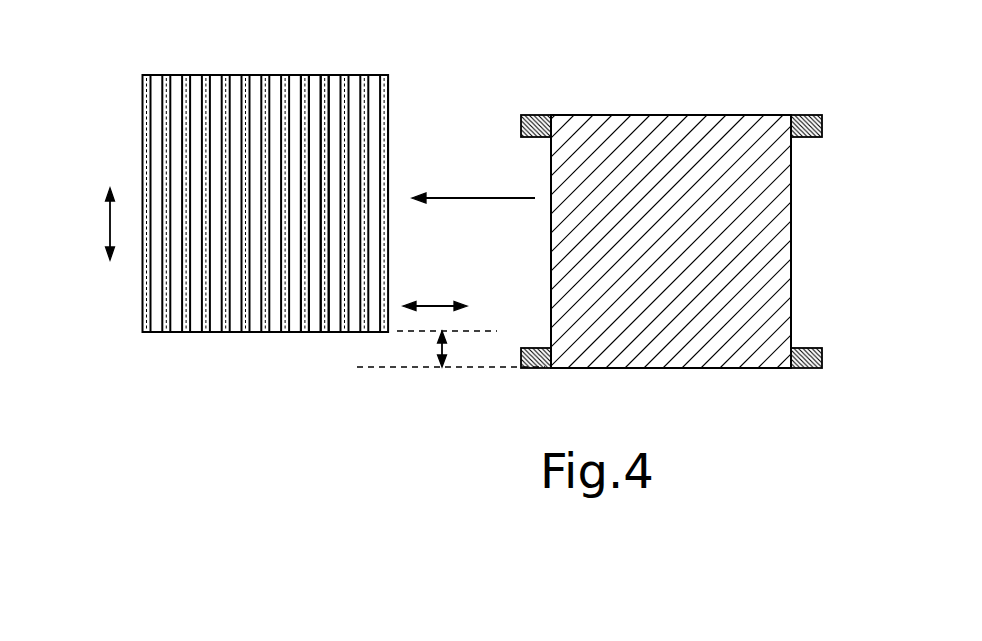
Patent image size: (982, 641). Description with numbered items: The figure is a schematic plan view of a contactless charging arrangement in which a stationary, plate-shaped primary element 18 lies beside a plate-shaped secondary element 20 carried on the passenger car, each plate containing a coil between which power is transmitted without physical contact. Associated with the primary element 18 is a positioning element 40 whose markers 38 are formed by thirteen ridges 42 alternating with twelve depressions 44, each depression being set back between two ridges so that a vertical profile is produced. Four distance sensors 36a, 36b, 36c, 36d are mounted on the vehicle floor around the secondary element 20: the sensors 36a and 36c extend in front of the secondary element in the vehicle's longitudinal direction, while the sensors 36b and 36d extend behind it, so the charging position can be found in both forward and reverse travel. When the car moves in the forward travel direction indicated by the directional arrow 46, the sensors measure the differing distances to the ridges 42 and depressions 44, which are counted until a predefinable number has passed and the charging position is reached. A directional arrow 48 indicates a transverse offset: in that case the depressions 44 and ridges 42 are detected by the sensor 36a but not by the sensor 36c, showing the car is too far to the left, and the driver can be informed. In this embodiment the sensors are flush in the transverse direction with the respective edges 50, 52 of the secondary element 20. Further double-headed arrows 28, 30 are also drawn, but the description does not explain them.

The primary element 18 is at (232, 332).
The secondary element 20 is at (615, 115).
The horizontal offset distance 28 is at (435, 306).
The vertical movement direction 30 is at (108, 222).
The sensor 36a is at (537, 115).
The sensor 36b is at (808, 115).
The sensor 36c is at (535, 368).
The sensor 36d is at (812, 368).
The markers 38 is at (333, 80).
The positioning element 40 is at (385, 117).
The ridges 42 is at (385, 148).
The depressions 44 is at (312, 84).
The directional arrow 46 is at (470, 198).
The directional arrow 48 is at (437, 350).
The edge 50 is at (704, 105).
The edge 52 is at (660, 379).